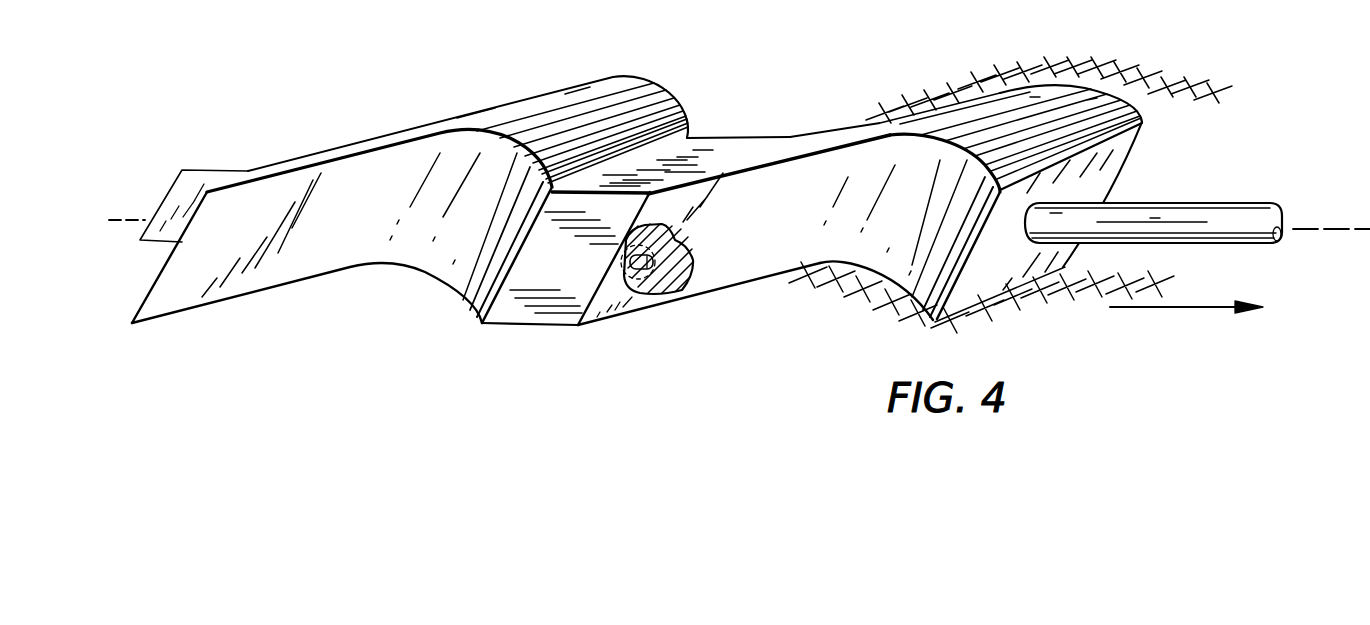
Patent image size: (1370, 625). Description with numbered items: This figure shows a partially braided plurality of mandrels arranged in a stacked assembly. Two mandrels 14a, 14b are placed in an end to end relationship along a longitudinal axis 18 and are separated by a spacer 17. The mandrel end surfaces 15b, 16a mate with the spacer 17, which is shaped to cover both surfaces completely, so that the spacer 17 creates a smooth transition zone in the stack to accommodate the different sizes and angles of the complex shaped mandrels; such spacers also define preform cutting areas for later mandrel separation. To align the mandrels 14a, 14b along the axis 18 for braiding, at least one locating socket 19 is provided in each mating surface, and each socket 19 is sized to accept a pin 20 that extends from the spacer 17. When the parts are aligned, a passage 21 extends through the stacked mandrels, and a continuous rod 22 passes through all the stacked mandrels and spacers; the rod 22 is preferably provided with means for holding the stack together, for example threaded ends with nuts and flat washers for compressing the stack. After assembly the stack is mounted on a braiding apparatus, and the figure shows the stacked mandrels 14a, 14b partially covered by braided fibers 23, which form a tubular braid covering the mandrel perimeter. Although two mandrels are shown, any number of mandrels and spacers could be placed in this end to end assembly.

The mandrel 14a is at (402, 130).
The mandrel 14b is at (858, 130).
The pin 20 is at (568, 103).
The passage 21 is at (1103, 120).
The spacer 17 is at (697, 153).
The locating socket 19 is at (652, 268).
The surface 16a is at (488, 322).
The surface 15b is at (570, 326).
The continuous rod 22 is at (1255, 243).
The fibers 23 is at (1193, 78).
The longitudinal axis 18 is at (1318, 228).